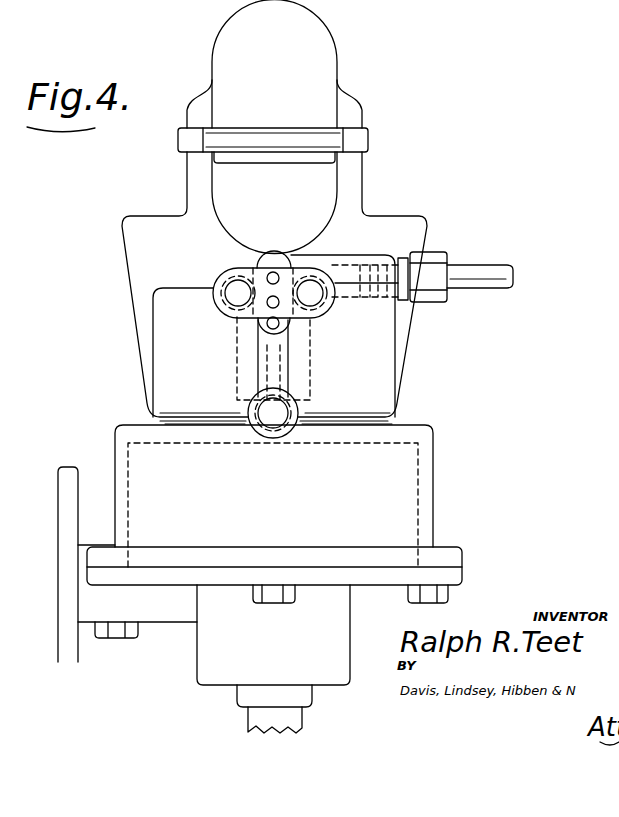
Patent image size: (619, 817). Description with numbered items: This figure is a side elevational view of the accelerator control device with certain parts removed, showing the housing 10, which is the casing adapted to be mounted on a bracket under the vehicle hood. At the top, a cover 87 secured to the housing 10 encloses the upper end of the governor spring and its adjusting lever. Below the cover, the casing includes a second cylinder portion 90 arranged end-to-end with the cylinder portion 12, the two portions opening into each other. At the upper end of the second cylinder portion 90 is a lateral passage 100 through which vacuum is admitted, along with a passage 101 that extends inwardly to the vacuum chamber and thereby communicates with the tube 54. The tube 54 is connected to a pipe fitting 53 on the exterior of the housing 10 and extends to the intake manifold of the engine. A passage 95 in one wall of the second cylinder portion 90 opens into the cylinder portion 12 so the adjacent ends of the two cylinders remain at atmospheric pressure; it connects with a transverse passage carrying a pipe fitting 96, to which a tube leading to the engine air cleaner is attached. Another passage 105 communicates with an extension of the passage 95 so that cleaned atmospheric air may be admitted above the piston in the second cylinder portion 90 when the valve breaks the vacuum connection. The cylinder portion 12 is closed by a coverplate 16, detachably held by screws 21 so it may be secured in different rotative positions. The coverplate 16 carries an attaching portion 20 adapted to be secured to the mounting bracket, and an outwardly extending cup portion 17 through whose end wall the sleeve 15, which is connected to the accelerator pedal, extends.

The cover 87 is at (318, 58).
The housing 10 is at (408, 362).
The second cylinder portion 90 is at (163, 332).
The lateral passage 100 is at (279, 305).
The passage 101 is at (246, 268).
The passage 105 is at (269, 327).
The passage 95 is at (270, 372).
The pipe fitting 96 is at (290, 413).
The pipe fitting 53 is at (432, 262).
The tube 54 is at (492, 270).
The cylinder portion 12 is at (426, 472).
The coverplate 16 is at (450, 577).
The attaching portion 20 is at (65, 475).
The screws 21 is at (440, 595).
The cup portion 17 is at (212, 655).
The sleeve 15 is at (260, 717).